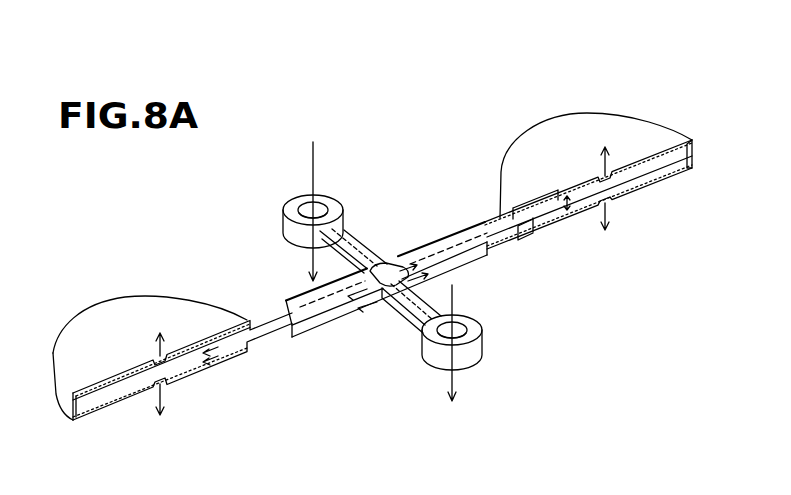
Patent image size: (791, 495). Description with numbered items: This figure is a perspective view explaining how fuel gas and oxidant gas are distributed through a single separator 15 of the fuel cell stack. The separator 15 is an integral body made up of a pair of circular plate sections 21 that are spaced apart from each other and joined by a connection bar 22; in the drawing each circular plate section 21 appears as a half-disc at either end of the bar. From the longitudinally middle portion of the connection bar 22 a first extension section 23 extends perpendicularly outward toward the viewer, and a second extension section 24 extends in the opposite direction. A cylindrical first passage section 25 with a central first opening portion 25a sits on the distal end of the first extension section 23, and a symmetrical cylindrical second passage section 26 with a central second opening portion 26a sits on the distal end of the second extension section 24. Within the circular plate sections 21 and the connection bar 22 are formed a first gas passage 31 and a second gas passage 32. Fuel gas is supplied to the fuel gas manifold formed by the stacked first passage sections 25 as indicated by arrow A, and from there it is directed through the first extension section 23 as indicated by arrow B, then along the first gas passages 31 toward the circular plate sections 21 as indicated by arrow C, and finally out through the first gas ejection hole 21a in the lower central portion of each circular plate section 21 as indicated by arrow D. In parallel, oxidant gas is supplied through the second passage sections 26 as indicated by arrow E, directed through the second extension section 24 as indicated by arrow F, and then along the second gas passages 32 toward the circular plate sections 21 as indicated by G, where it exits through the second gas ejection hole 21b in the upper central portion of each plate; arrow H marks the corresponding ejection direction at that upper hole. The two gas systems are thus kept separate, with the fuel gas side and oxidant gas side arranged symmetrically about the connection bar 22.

The separator 15 is at (593, 98).
The circular plate section 21 is at (107, 304).
The first gas ejection hole 21a is at (163, 383).
The second gas ejection hole 21b is at (157, 355).
The connection bar 22 is at (468, 228).
The first extension section 23 is at (393, 307).
The second extension section 24 is at (353, 240).
The first passage section 25 is at (482, 331).
The first opening portion 25a is at (463, 327).
The second passage section 26 is at (314, 200).
The second opening portion 26a is at (323, 207).
The first gas passage 31 is at (535, 230).
The second gas passage 32 is at (535, 208).
The arrow A is at (456, 298).
The arrow B is at (410, 313).
The arrow C is at (230, 357).
The arrow D is at (150, 404).
The arrow E is at (318, 200).
The arrow F is at (380, 267).
The arrow G is at (247, 327).
The direction H is at (167, 350).